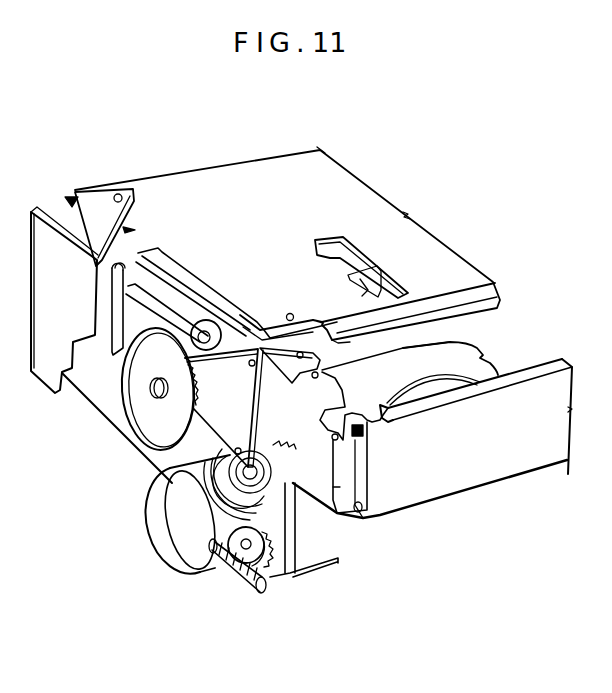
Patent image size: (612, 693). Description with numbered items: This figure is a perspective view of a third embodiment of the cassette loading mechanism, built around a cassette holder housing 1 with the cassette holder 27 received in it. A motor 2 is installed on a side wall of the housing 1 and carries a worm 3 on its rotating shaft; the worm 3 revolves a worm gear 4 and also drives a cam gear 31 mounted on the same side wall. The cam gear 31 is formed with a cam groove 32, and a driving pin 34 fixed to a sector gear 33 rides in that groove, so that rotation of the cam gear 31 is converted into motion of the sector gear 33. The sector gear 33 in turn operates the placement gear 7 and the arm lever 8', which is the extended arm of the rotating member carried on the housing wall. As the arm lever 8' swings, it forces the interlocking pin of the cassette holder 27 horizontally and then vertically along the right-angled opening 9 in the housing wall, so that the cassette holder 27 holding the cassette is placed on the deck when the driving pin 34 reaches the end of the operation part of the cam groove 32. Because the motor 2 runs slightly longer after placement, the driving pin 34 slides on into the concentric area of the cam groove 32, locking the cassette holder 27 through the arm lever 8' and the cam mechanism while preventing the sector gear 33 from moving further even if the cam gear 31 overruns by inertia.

The cassette holder housing 1 is at (355, 178).
The motor 2 is at (170, 540).
The worm 3 is at (250, 587).
The worm gear 4 is at (238, 572).
The placement gear 7 is at (123, 397).
The arm lever 8' is at (226, 232).
The right-angled opening 9 is at (133, 272).
The cassette holder 27 is at (480, 354).
The cam gear 31 is at (288, 501).
The cam groove 32 is at (232, 470).
The sector gear 33 is at (220, 412).
The driving pin 34 is at (236, 452).